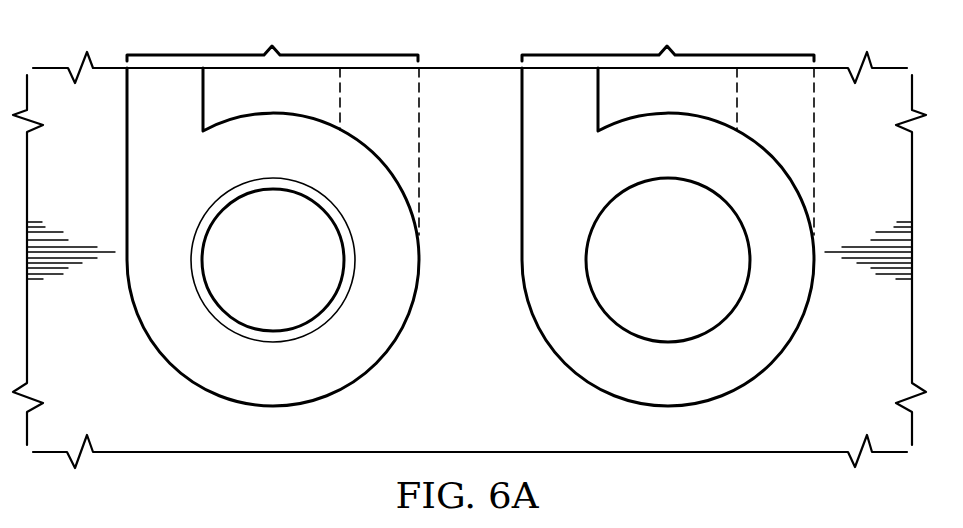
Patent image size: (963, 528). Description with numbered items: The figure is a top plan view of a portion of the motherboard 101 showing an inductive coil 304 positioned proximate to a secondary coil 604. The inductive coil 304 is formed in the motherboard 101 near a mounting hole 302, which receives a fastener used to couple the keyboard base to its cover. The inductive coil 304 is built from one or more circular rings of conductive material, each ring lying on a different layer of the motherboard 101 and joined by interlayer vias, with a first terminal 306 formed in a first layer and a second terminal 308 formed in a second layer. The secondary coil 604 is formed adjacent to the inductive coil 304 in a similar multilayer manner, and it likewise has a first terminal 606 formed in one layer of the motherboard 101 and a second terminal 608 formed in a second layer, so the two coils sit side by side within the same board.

The motherboard 101 is at (472, 78).
The mounting hole 302 is at (250, 276).
The inductive coil 304 is at (272, 39).
The first terminal 306 is at (135, 177).
The second terminal 308 is at (407, 127).
The secondary coil 604 is at (668, 39).
The first terminal 606 is at (531, 177).
The second terminal 608 is at (803, 142).